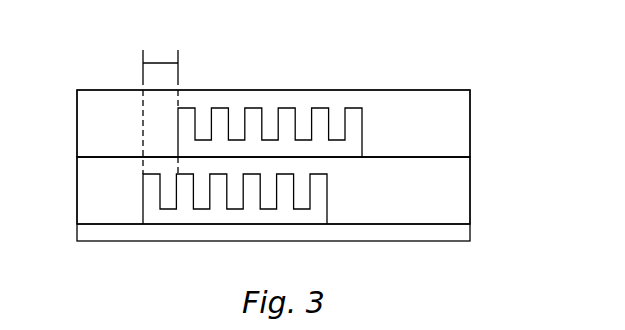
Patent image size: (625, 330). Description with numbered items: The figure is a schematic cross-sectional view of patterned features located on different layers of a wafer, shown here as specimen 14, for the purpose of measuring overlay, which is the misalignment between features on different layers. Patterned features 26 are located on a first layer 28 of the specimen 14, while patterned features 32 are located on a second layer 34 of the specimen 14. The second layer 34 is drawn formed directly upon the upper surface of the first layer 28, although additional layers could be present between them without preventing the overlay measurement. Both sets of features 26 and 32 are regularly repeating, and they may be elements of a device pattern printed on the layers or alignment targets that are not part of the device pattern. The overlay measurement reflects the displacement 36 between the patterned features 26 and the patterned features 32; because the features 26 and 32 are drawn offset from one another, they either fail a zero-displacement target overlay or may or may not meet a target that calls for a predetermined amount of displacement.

The specimen 14 is at (472, 229).
The first layer 28 is at (125, 203).
The second layer 34 is at (123, 135).
The patterned features 26 is at (320, 198).
The patterned features 32 is at (353, 133).
The displacement 36 is at (156, 53).